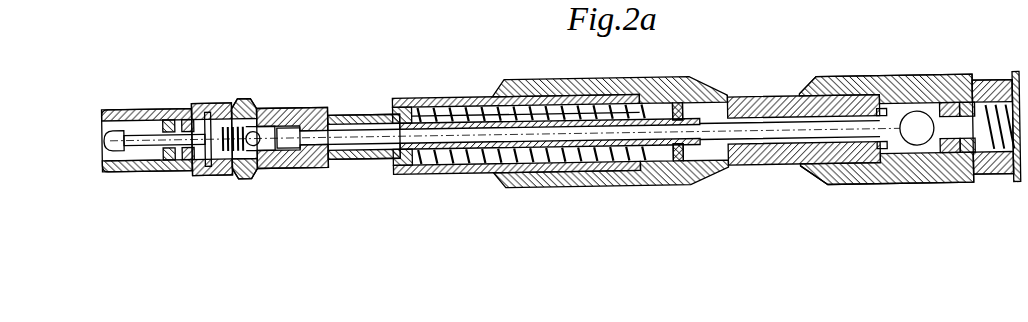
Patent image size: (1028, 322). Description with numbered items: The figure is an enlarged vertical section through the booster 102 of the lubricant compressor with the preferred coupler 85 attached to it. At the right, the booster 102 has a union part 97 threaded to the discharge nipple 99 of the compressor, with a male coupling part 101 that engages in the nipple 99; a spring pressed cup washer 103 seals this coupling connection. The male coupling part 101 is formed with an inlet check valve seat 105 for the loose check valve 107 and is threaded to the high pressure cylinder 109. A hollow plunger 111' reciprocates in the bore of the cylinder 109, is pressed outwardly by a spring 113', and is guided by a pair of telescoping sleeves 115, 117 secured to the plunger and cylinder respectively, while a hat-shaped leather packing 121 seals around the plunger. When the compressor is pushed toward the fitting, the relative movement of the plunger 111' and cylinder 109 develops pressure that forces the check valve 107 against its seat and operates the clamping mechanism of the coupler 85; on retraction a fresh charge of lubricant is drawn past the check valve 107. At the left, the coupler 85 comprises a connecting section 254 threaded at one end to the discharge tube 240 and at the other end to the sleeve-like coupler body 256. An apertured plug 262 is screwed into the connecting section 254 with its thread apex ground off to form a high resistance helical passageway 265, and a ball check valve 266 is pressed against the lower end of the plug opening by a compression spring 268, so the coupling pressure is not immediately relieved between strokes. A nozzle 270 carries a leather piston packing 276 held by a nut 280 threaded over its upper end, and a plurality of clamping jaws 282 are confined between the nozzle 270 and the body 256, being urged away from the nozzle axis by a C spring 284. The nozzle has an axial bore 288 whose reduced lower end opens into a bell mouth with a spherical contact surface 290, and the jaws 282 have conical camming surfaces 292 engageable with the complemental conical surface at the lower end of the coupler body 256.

The coupler 85 is at (208, 100).
The union part 97 is at (893, 80).
The discharge nipple 99 is at (1000, 178).
The male coupling part 101 is at (905, 142).
The booster 102 is at (531, 78).
The spring pressed cup washer 103 is at (970, 175).
The inlet check valve seat 105 is at (935, 175).
The loose check valve 107 is at (872, 150).
The high pressure cylinder 109 is at (770, 172).
The hollow plunger 111' is at (641, 177).
The spring 113' is at (537, 170).
The telescoping sleeve 115 is at (450, 178).
The telescoping sleeve 117 is at (540, 190).
The hat-shaped leather packing 121 is at (702, 165).
The discharge tube 240 is at (365, 160).
The connecting section 254 is at (292, 140).
The coupler body 256 is at (216, 180).
The apertured plug 262 is at (298, 150).
The helical passageway 265 is at (262, 160).
The ball check valve 266 is at (258, 135).
The compression spring 268 is at (245, 182).
The nozzle 270 is at (130, 112).
The piston packing 276 is at (181, 168).
The nut 280 is at (203, 112).
The clamping jaws 282 is at (162, 120).
The C spring 284 is at (132, 170).
The axial bore 288 is at (152, 152).
The spherical contact surface 290 is at (114, 140).
The conical camming surfaces 292 is at (104, 154).